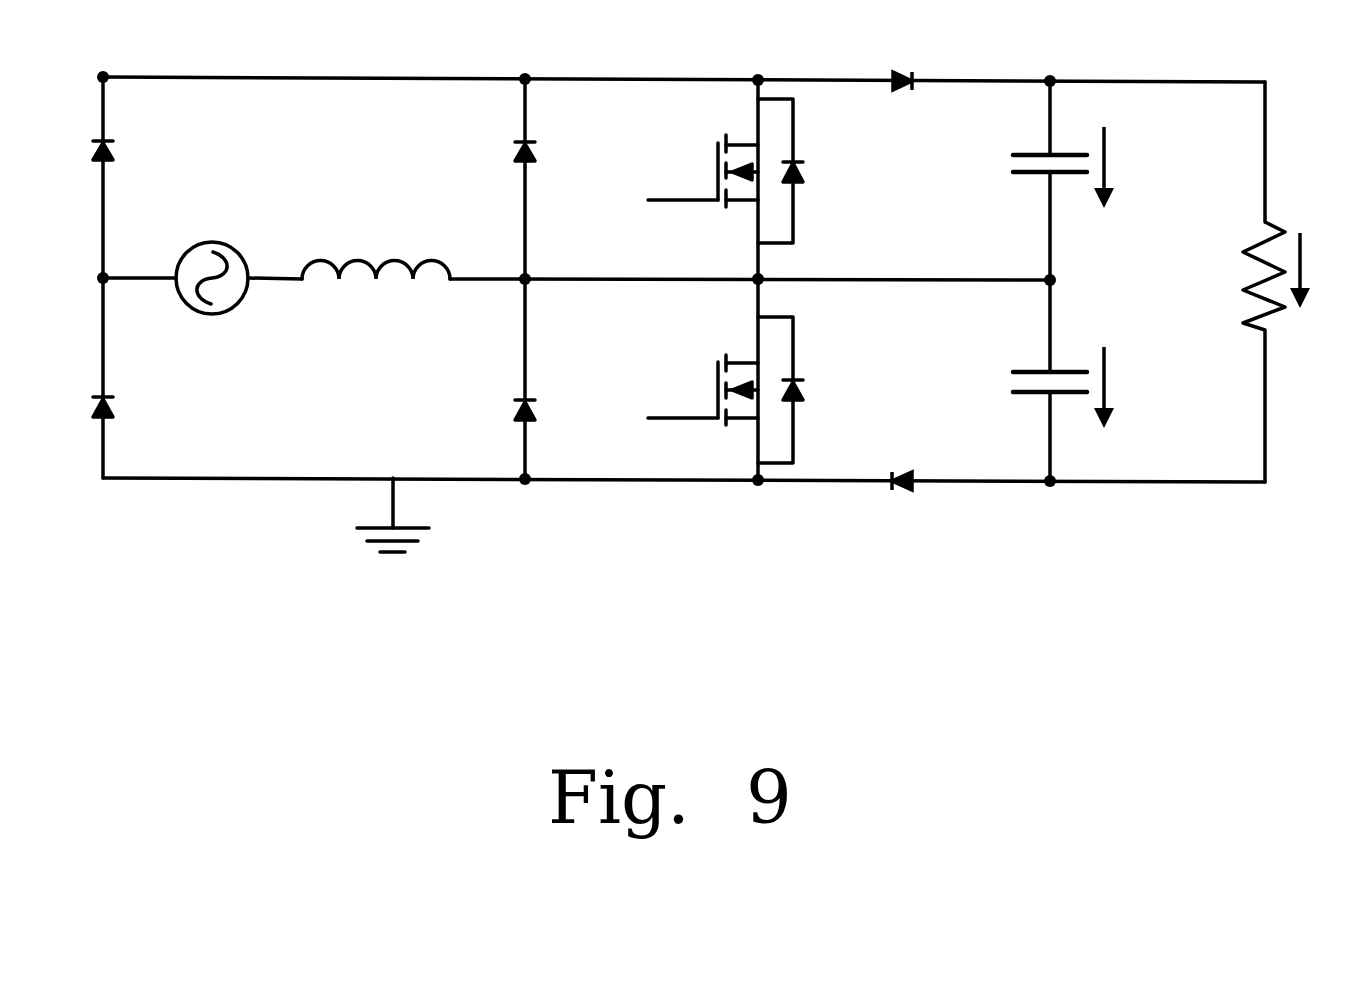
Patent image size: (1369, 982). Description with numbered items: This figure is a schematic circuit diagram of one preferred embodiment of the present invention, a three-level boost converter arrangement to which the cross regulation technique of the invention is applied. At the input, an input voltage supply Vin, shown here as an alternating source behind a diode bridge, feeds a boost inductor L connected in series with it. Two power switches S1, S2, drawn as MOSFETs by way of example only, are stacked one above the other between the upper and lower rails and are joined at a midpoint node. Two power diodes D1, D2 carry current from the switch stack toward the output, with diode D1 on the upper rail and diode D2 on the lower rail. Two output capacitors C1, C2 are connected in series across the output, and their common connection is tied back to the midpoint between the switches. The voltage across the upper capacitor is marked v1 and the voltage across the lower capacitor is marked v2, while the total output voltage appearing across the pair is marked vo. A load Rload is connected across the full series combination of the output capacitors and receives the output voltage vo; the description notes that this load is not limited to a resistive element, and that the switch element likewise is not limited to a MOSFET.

The input voltage supply Vin is at (212, 305).
The boost inductor L is at (376, 300).
The power switch S1 is at (725, 179).
The power switch S2 is at (725, 379).
The power diode D1 is at (892, 108).
The power diode D2 is at (892, 456).
The output capacitor C1 is at (1016, 180).
The output capacitor C2 is at (1016, 380).
The voltage across first capacitor v1 is at (1122, 167).
The voltage across second capacitor v2 is at (1122, 387).
The load Rload is at (1300, 306).
The output voltage vo is at (1320, 270).